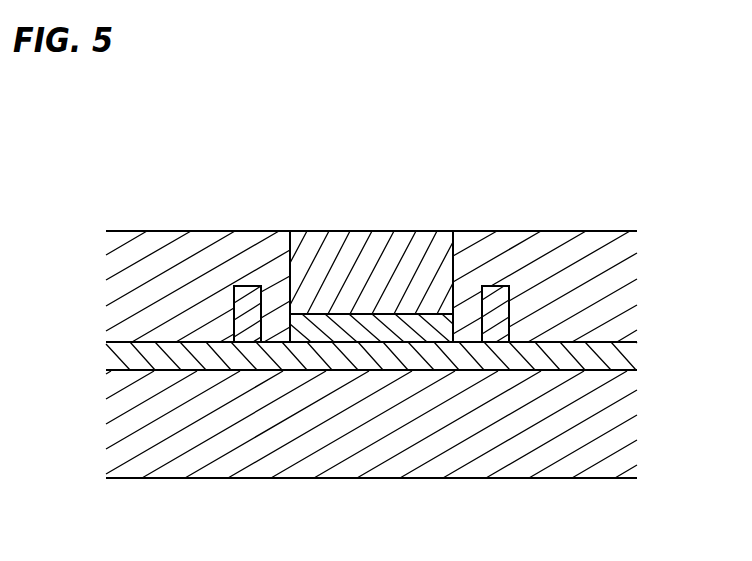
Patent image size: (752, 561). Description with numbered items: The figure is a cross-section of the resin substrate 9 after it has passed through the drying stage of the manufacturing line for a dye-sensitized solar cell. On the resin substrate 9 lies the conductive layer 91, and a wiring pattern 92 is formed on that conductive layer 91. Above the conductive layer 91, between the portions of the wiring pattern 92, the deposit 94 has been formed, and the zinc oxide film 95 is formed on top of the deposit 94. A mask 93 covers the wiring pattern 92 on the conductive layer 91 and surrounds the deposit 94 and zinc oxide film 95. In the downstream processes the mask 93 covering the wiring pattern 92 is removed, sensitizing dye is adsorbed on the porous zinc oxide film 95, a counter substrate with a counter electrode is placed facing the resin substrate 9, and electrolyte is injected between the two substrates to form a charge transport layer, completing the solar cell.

The resin substrate 9 is at (427, 473).
The conductive layer 91 is at (610, 343).
The wiring pattern 92 is at (493, 298).
The mask 93 is at (583, 242).
The deposit 94 is at (347, 317).
The zinc oxide film 95 is at (365, 250).